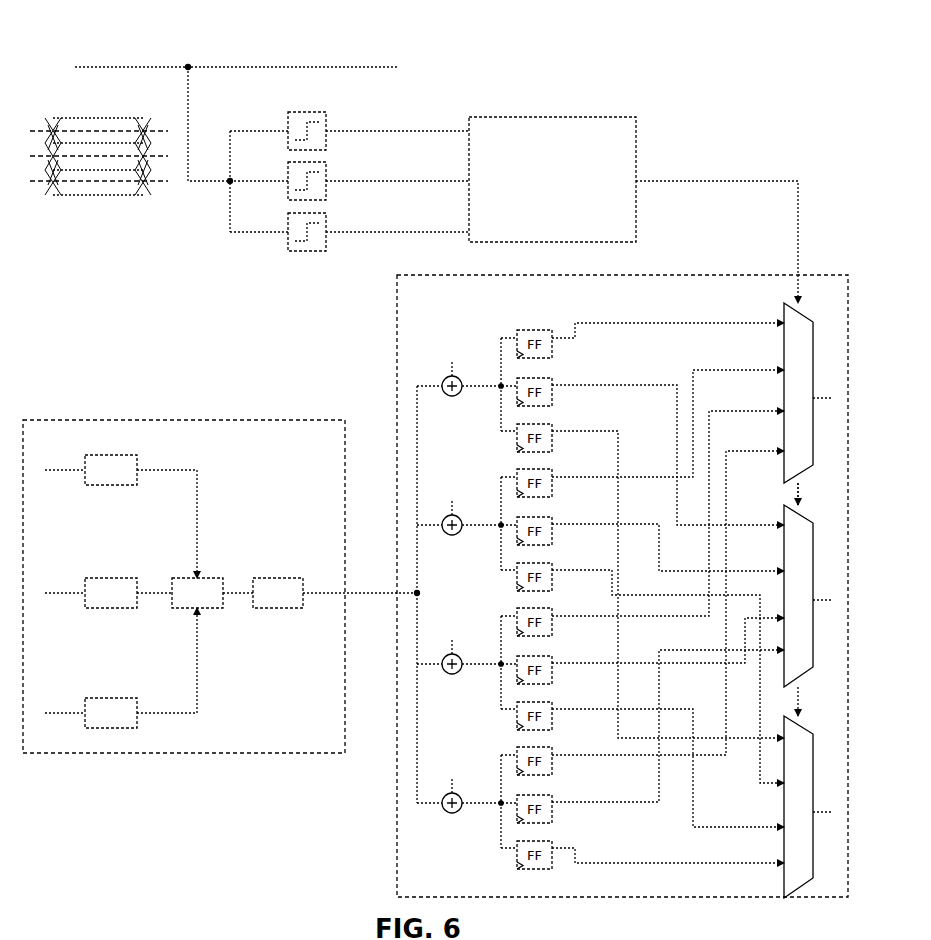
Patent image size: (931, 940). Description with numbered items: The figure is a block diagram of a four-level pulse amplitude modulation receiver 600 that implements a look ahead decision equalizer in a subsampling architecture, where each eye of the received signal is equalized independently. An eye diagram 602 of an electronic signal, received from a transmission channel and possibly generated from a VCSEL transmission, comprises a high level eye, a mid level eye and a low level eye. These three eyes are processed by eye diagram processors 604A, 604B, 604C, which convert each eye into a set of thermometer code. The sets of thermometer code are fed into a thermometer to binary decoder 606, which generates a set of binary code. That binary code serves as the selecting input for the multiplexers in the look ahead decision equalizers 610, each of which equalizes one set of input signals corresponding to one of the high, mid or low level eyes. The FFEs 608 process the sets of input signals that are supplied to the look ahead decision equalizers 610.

The PAM-4 receiver 600 is at (107, 48).
The eye diagram 602 is at (272, 139).
The eye diagram processor 604A is at (330, 112).
The eye diagram processor 604B is at (330, 162).
The eye diagram processor 604C is at (330, 213).
The thermometer to binary decoder 606 is at (563, 113).
The FFEs 608 is at (228, 417).
The look ahead decision equalizers 610 is at (704, 273).